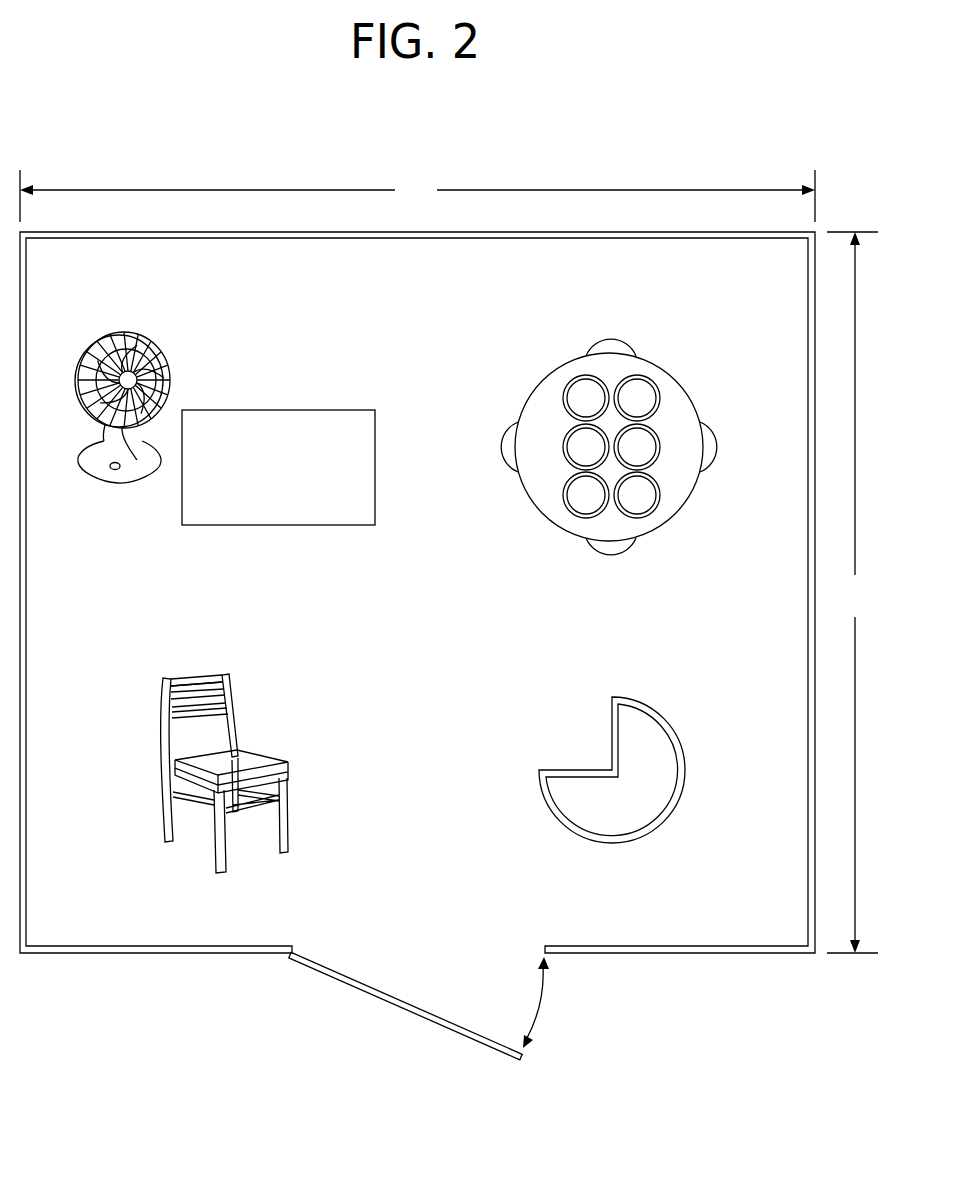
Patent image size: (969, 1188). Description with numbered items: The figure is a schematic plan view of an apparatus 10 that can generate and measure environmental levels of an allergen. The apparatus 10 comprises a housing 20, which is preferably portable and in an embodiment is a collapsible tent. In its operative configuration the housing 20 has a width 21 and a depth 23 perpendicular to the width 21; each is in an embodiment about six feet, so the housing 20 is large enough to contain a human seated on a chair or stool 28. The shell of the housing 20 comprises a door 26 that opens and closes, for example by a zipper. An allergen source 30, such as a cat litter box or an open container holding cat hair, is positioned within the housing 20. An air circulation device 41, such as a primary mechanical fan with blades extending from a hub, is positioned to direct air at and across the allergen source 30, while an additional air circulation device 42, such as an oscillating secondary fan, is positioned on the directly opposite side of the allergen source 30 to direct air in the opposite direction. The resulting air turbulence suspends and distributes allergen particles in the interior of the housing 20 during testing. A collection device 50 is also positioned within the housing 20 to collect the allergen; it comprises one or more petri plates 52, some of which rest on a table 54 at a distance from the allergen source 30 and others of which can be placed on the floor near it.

The apparatus 10 is at (181, 104).
The housing 20 is at (148, 953).
The width 21 is at (417, 196).
The depth 23 is at (852, 592).
The door 26 is at (388, 1005).
The chair or stool 28 is at (262, 752).
The allergen source 30 is at (300, 410).
The air circulation device 41 is at (150, 345).
The additional air circulation device 42 is at (654, 711).
The collection device 50 is at (618, 427).
The petri plates 52 is at (637, 447).
The table 54 is at (541, 400).